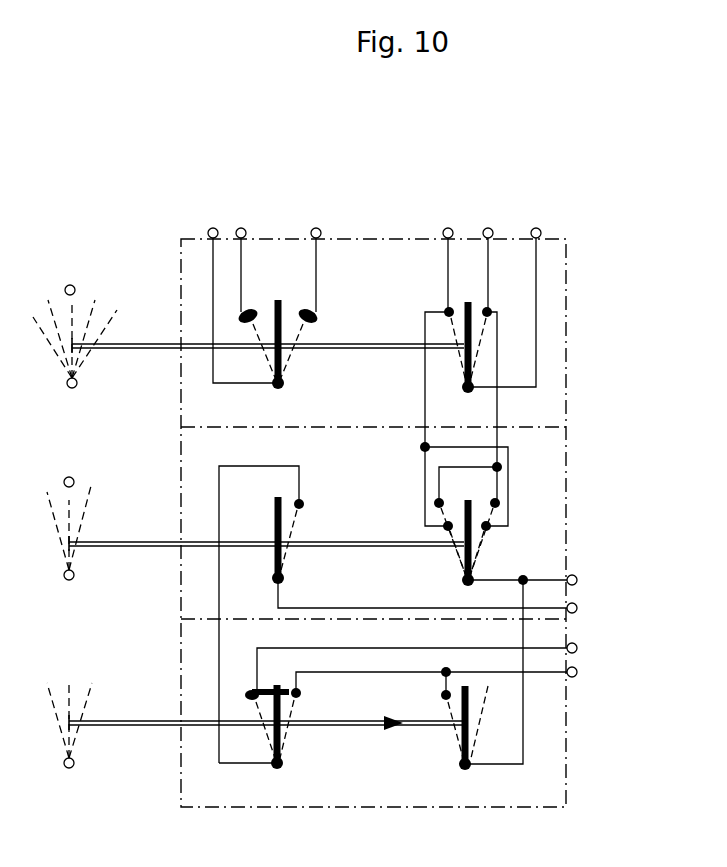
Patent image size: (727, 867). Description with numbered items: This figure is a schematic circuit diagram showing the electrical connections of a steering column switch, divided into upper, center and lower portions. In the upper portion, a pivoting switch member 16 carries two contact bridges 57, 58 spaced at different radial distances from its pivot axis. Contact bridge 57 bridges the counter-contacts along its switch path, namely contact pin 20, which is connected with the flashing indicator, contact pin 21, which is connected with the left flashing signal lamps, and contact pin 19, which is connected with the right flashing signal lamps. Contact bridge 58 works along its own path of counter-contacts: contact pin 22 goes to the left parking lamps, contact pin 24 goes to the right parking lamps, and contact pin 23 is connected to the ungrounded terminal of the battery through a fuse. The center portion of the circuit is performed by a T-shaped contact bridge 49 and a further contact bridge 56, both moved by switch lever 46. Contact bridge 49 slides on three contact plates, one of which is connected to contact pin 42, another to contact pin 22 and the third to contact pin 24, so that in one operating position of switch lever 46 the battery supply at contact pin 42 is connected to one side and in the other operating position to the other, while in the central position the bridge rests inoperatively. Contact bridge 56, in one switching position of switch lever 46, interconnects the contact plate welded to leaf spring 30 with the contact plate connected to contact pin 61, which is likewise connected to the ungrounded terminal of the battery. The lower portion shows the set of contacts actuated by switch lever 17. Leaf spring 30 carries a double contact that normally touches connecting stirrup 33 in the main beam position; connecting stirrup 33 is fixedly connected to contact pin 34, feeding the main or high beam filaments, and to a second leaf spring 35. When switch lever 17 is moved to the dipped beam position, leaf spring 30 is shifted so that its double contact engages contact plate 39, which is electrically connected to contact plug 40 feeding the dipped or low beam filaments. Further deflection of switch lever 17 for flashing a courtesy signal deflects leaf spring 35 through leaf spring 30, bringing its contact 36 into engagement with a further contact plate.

The switch member 16 is at (78, 306).
The switch lever 46 is at (76, 504).
The switch lever 17 is at (76, 694).
The contact pin 19 is at (316, 258).
The contact pin 20 is at (240, 294).
The contact pin 21 is at (241, 258).
The contact pin 22 is at (447, 258).
The contact pin 23 is at (506, 296).
The contact pin 24 is at (487, 258).
The contact bridge 57 is at (283, 300).
The contact bridge 58 is at (469, 302).
The contact bridge 56 is at (274, 510).
The T-shaped contact bridge 49 is at (476, 490).
The contact pin 42 is at (535, 668).
The contact pin 61 is at (441, 598).
The contact plug 40 is at (431, 665).
The contact pin 34 is at (450, 678).
The contact plate 39 is at (250, 694).
The connecting stirrup 33 is at (300, 692).
The leaf spring 30 is at (281, 703).
The contact 36 is at (440, 696).
The leaf spring 35 is at (470, 707).